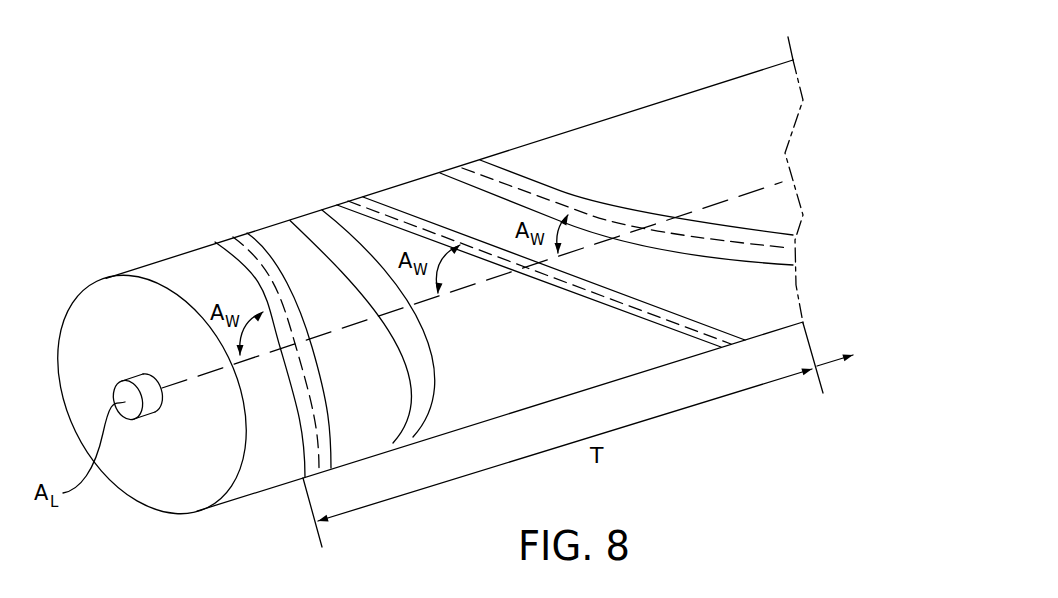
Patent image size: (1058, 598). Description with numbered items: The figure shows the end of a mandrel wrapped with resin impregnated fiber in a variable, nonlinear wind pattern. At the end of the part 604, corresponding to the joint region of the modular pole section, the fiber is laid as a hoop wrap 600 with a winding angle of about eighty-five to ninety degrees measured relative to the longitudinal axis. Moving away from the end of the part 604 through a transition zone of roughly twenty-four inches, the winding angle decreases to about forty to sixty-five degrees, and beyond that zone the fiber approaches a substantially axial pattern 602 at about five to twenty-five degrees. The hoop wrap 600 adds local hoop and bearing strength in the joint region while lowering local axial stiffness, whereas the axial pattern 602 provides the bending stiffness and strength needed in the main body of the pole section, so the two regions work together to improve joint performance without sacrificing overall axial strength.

The hoop wrap 600 is at (215, 243).
The substantially axial pattern 602 is at (787, 240).
The end of the part 604 is at (302, 482).